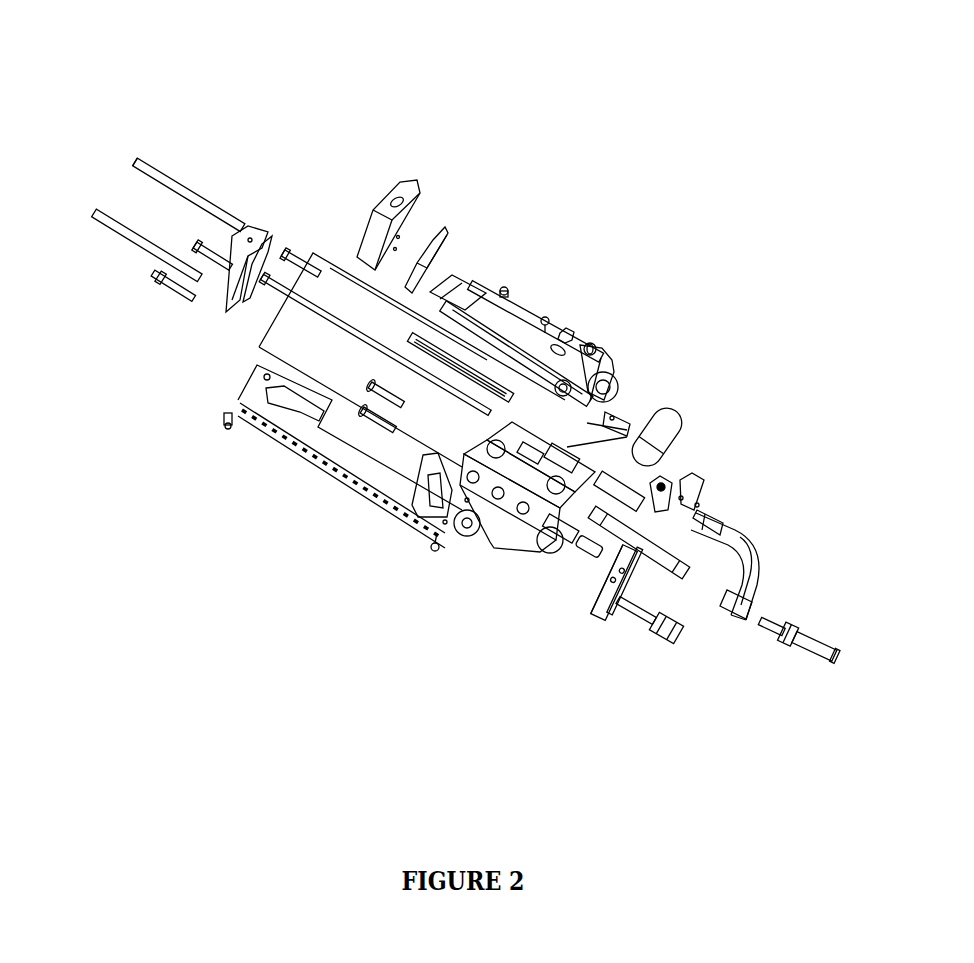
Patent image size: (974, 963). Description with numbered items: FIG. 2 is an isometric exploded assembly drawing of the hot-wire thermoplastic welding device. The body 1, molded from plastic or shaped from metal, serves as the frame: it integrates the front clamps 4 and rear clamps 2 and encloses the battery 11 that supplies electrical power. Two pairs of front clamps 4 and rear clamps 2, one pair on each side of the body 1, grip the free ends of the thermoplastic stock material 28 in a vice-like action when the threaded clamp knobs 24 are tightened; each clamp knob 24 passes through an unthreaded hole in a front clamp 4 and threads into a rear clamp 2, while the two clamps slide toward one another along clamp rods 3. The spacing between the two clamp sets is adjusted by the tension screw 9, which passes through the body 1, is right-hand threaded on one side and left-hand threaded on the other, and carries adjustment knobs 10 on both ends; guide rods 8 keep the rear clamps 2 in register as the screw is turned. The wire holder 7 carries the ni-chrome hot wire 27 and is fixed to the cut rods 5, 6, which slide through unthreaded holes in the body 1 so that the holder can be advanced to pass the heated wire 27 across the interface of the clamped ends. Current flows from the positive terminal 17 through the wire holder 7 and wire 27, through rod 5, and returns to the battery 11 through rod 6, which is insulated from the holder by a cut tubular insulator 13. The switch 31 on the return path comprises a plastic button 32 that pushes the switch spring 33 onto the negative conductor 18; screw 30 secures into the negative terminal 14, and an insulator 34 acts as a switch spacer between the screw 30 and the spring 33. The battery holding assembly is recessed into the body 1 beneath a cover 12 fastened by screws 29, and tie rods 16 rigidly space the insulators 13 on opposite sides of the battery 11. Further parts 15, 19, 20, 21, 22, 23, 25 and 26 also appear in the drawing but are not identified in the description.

The body 1 is at (313, 252).
The rear clamps 2 is at (544, 552).
The clamp rods 3 is at (561, 538).
The front clamps 4 is at (612, 624).
The cut rod 5 is at (762, 628).
The cut rod 6 is at (686, 561).
The wire holder 7 is at (747, 627).
The rods 8 is at (508, 545).
The tension screw 9 is at (559, 452).
The adjustment knobs 10 is at (621, 362).
The battery 11 is at (316, 414).
The cover 12 is at (260, 363).
The cut tubular insulator 13 is at (414, 182).
The negative terminal 14 is at (243, 227).
The clamp plate 15 is at (446, 225).
The tie rods 16 is at (135, 160).
The positive terminal 17 is at (262, 243).
The negative conductor 18 is at (634, 415).
The actuator rod 19 is at (533, 459).
The piston housing 20 is at (590, 478).
The nut 21 is at (807, 622).
The piston rod 22 is at (592, 562).
The guide shaft 23 is at (160, 283).
The clamp knobs 24 is at (676, 633).
The screw 25 is at (226, 420).
The rack 26 is at (413, 519).
The hot wire 27 is at (757, 555).
The stock material 28 is at (716, 521).
The screws 29 is at (673, 487).
The screw 30 is at (505, 288).
The switch 31 is at (564, 329).
The plastic button 32 is at (590, 345).
The switch spring 33 is at (498, 300).
The insulator 34 is at (544, 317).